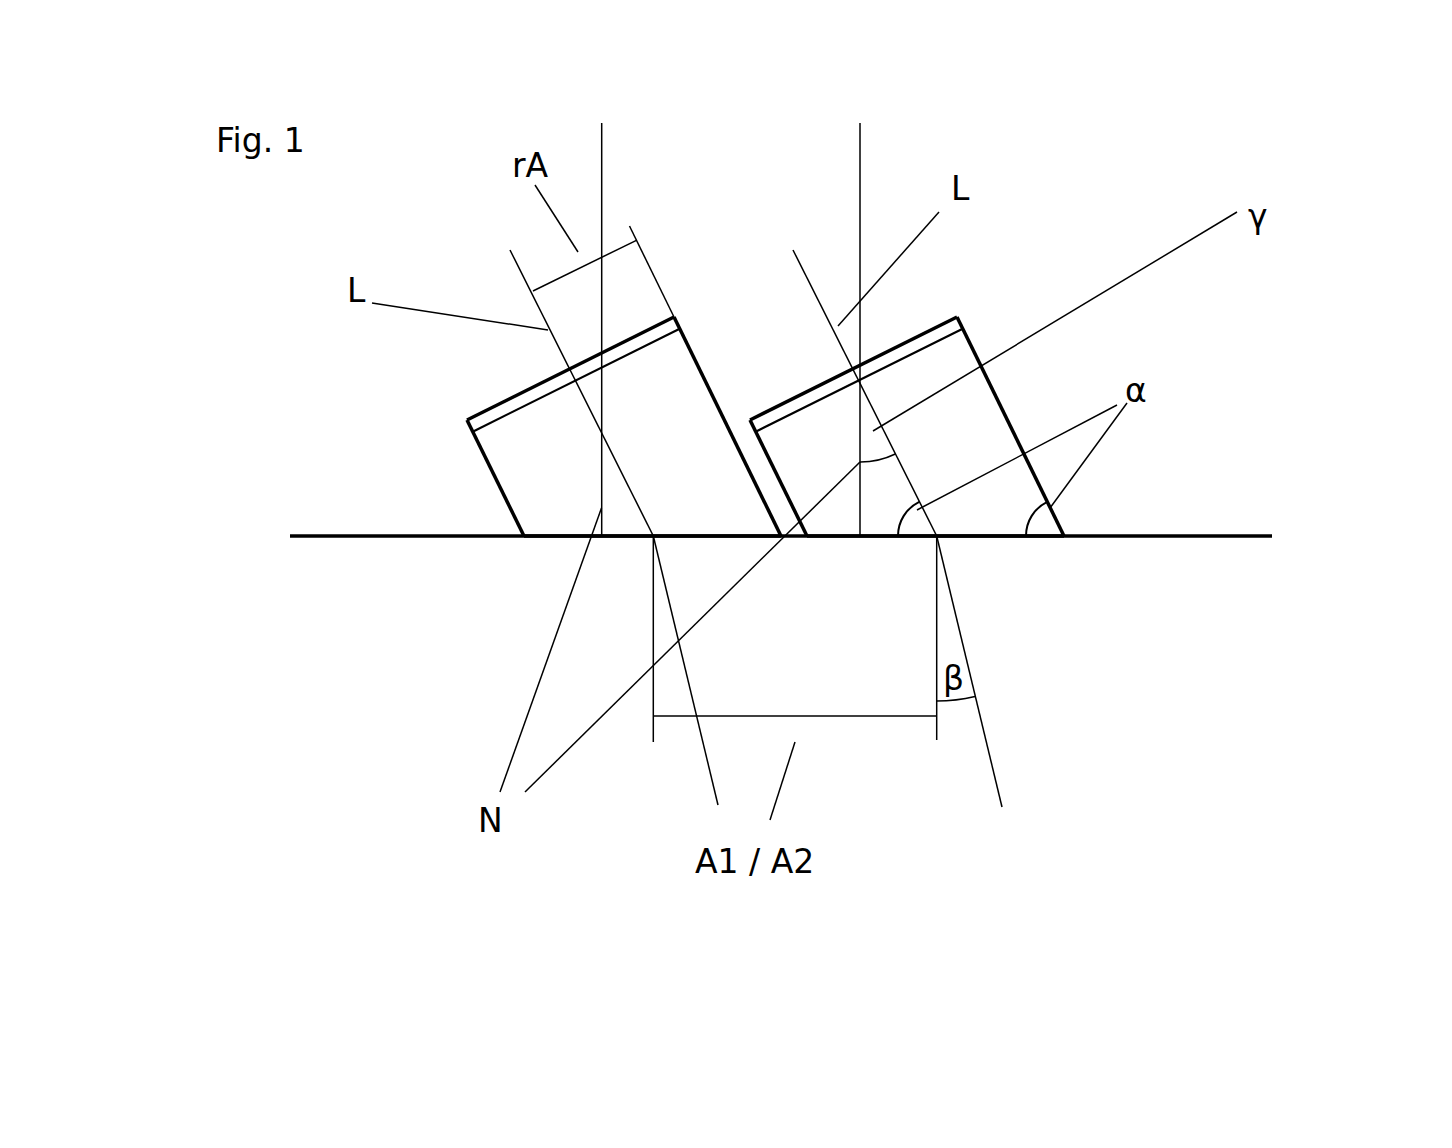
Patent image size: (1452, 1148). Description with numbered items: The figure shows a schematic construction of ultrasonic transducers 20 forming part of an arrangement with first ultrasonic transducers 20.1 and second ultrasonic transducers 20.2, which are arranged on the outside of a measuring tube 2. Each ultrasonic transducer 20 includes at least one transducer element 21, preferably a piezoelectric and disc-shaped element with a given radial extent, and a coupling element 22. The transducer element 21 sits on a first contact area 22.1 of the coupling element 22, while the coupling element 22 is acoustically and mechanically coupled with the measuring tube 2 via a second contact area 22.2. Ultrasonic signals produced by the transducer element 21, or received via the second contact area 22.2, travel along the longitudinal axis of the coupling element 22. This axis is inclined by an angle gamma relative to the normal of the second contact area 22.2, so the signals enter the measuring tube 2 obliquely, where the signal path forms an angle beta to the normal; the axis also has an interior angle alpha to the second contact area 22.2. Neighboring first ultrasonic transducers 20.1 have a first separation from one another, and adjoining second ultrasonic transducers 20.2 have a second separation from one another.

The measuring tube 2 is at (1252, 535).
The ultrasonic transducer 20 is at (779, 455).
The first ultrasonic transducer 20.1 is at (474, 509).
The second ultrasonic transducer 20.2 is at (1065, 507).
The transducer element 21 is at (483, 419).
The coupling element 22 is at (808, 432).
The first contact area 22.1 is at (653, 338).
The second contact area 22.2 is at (577, 537).